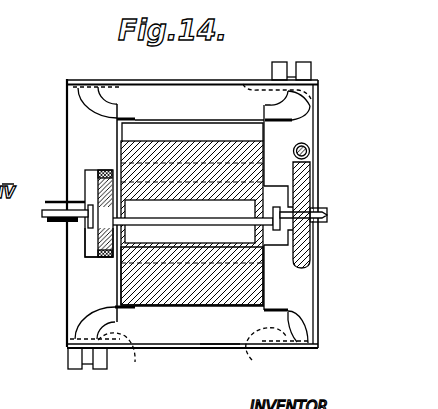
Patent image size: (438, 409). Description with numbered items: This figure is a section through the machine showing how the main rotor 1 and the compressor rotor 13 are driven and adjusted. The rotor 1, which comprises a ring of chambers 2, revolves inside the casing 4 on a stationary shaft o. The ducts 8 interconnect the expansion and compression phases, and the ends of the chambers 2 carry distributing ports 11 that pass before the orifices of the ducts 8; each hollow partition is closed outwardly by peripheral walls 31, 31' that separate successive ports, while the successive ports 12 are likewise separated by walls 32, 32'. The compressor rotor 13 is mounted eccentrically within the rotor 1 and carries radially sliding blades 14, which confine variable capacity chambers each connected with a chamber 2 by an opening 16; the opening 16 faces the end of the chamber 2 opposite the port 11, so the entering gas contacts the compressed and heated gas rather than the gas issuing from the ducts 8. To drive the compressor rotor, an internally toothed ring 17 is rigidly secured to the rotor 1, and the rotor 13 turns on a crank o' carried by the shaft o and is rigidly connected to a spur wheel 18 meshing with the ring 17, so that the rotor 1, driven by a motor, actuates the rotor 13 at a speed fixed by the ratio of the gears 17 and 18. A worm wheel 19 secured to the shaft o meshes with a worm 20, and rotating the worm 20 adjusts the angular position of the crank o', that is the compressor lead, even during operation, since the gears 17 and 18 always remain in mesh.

The rotor 1 is at (193, 118).
The chambers 2 is at (163, 100).
The casing 4 is at (217, 346).
The ducts 8 is at (303, 62).
The distributing port 11 is at (310, 110).
The successive ports 12 is at (305, 112).
The rotor of the compressor 13 is at (133, 279).
The radially sliding blades 14 is at (130, 125).
The opening 16 is at (148, 122).
The internally toothed ring 17 is at (85, 171).
The spur wheel 18 is at (87, 239).
The worm wheel 19 is at (306, 250).
The worm 20 is at (309, 149).
The peripheral wall 31 is at (271, 217).
The peripheral wall 31' is at (104, 216).
The wall 32 is at (313, 209).
The wall 32' is at (70, 213).
The stationary shaft o is at (188, 224).
The crank o' is at (183, 221).